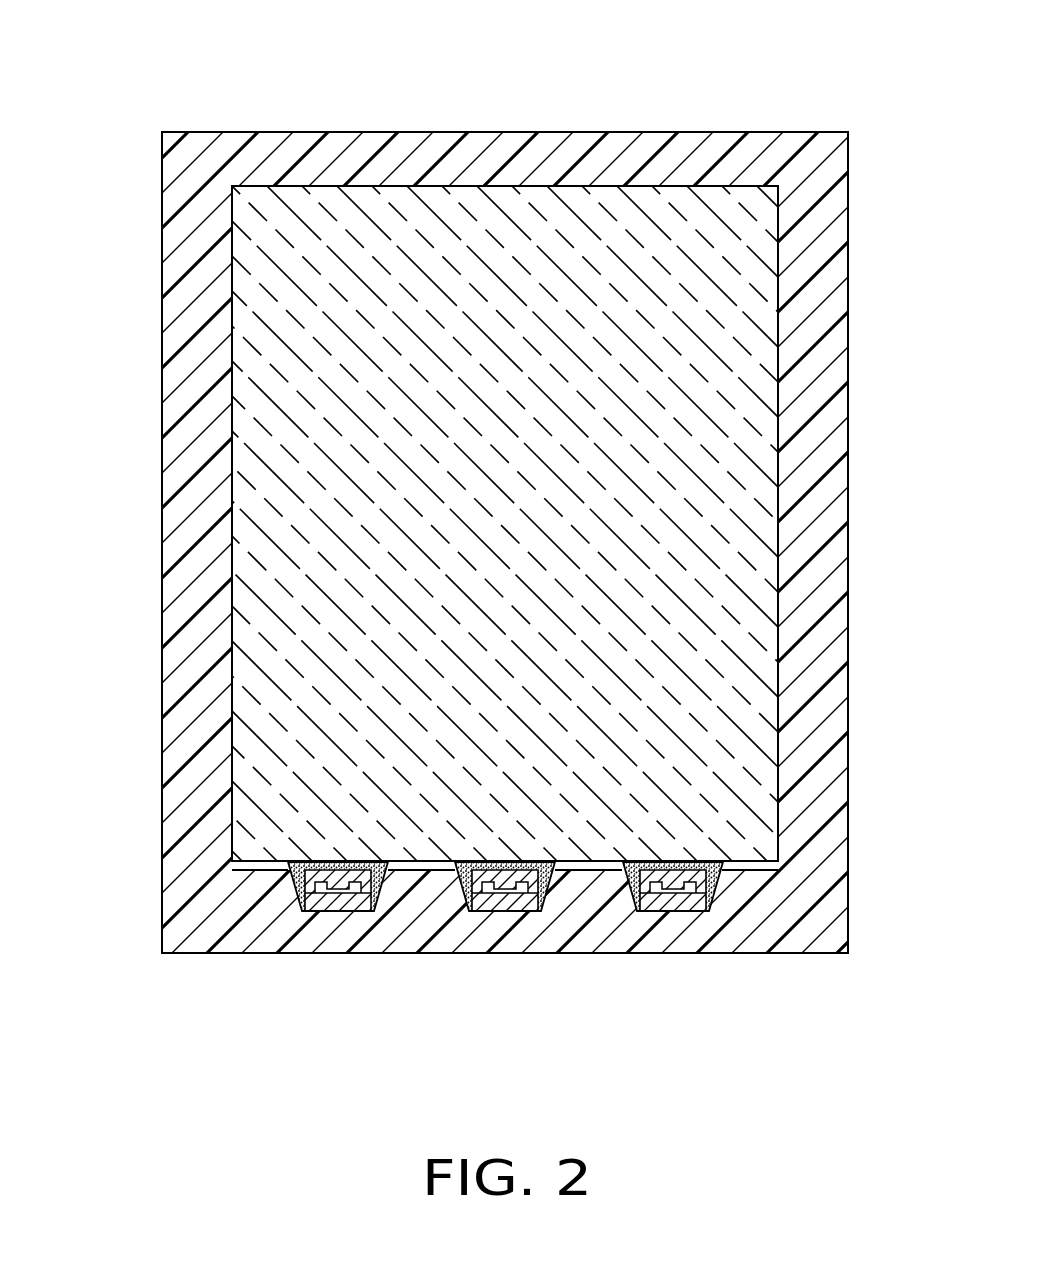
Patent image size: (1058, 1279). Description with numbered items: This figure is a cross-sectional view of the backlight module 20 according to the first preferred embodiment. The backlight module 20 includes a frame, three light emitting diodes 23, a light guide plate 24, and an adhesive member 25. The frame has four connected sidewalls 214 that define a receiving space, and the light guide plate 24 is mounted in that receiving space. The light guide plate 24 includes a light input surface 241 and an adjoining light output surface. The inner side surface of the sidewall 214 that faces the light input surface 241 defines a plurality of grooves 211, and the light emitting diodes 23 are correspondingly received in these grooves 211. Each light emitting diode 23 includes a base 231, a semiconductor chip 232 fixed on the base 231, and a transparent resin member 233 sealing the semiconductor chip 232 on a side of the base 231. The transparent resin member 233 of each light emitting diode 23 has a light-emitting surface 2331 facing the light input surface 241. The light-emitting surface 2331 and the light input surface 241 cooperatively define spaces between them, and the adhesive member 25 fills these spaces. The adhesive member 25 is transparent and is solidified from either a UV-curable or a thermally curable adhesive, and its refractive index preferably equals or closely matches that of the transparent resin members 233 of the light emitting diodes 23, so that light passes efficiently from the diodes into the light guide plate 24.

The backlight module 20 is at (510, 41).
The sidewall 214 is at (835, 727).
The light guide plate 24 is at (635, 537).
The light input surface 241 is at (757, 857).
The adhesive member 25 is at (722, 866).
The groove 211 is at (300, 895).
The light emitting diode 23 is at (491, 958).
The base 231 is at (465, 951).
The semiconductor chip 232 is at (518, 898).
The transparent resin member 233 is at (548, 884).
The light-emitting surface 2331 is at (327, 850).